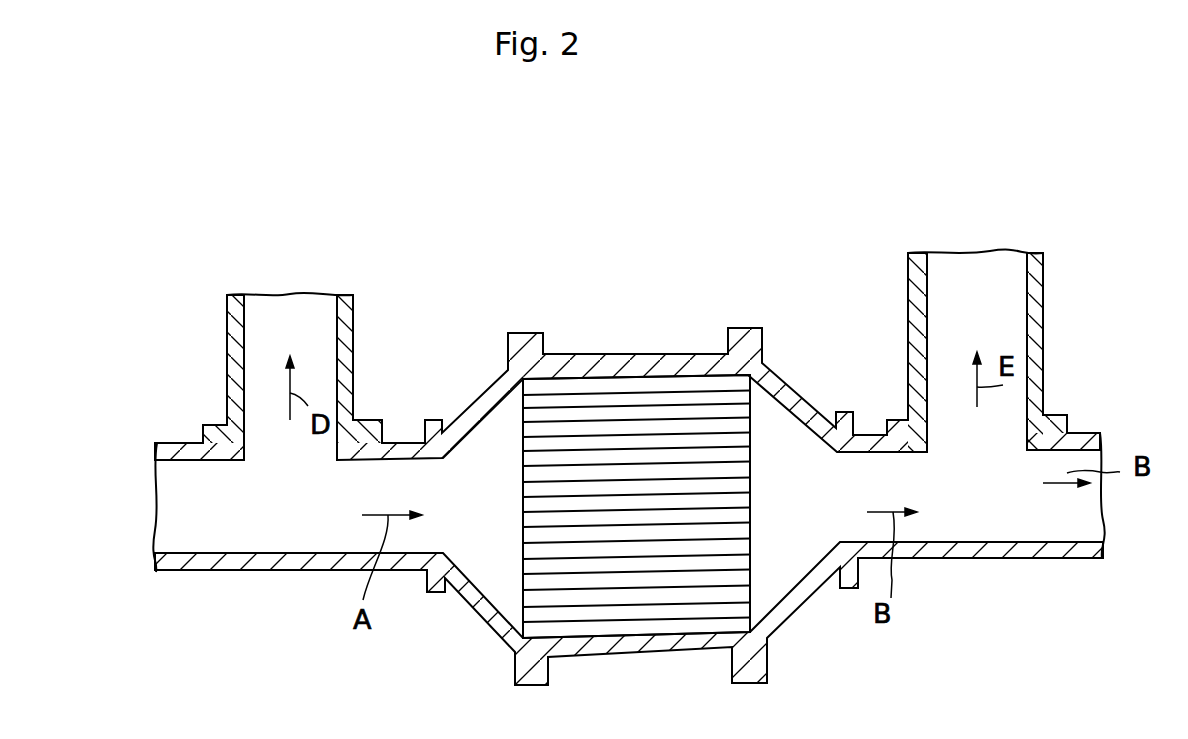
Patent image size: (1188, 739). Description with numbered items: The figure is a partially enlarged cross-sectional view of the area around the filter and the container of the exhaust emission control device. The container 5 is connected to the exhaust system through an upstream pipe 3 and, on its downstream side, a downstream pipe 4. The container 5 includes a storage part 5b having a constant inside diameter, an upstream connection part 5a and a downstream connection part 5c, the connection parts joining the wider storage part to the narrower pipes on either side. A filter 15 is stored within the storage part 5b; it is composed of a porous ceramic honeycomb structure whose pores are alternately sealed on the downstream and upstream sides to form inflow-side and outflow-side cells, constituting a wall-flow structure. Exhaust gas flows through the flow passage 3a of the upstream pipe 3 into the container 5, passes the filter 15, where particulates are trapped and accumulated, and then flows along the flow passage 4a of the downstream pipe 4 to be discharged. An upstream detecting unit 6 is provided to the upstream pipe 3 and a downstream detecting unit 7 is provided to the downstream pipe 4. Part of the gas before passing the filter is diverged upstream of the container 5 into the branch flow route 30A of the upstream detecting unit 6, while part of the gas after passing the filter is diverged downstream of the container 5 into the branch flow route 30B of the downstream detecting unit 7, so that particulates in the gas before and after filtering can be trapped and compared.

The upstream pipe 3 is at (178, 443).
The flow passage of the upstream pipe 3a is at (222, 535).
The downstream pipe 4 is at (1080, 430).
The flow passage of the downstream pipe 4a is at (1080, 528).
The container 5 is at (648, 483).
The upstream connection part 5a is at (473, 402).
The storage part 5b is at (573, 360).
The downstream connection part 5c is at (790, 390).
The upstream detecting unit 6 is at (355, 342).
The downstream detecting unit 7 is at (1043, 332).
The filter 15 is at (697, 385).
The branch flow route of the upstream detecting unit 30A is at (343, 305).
The branch flow route of the downstream detecting unit 30B is at (1028, 296).